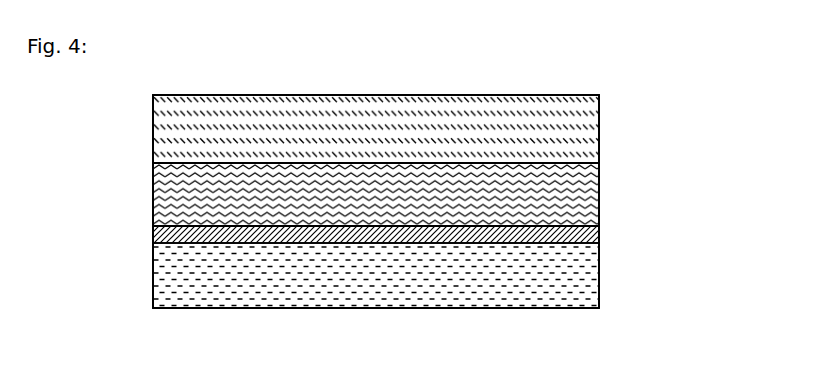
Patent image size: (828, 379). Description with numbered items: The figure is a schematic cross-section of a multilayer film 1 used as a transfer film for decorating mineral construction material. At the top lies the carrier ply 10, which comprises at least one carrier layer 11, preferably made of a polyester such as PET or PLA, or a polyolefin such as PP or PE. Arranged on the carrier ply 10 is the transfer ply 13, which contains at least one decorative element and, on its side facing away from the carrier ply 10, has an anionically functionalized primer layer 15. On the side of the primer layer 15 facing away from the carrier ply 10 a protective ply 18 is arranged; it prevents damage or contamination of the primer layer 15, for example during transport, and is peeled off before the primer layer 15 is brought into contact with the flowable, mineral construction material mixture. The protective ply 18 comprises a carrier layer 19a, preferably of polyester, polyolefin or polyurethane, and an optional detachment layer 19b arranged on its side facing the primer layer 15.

The multilayer film 1 is at (610, 97).
The carrier ply 10 is at (119, 120).
The carrier layer 11 is at (572, 137).
The transfer ply 13 is at (119, 195).
The anionically functionalized primer layer 15 is at (572, 200).
The protective ply 18 is at (132, 227).
The carrier layer 19a is at (572, 293).
The detachment layer 19b is at (572, 233).